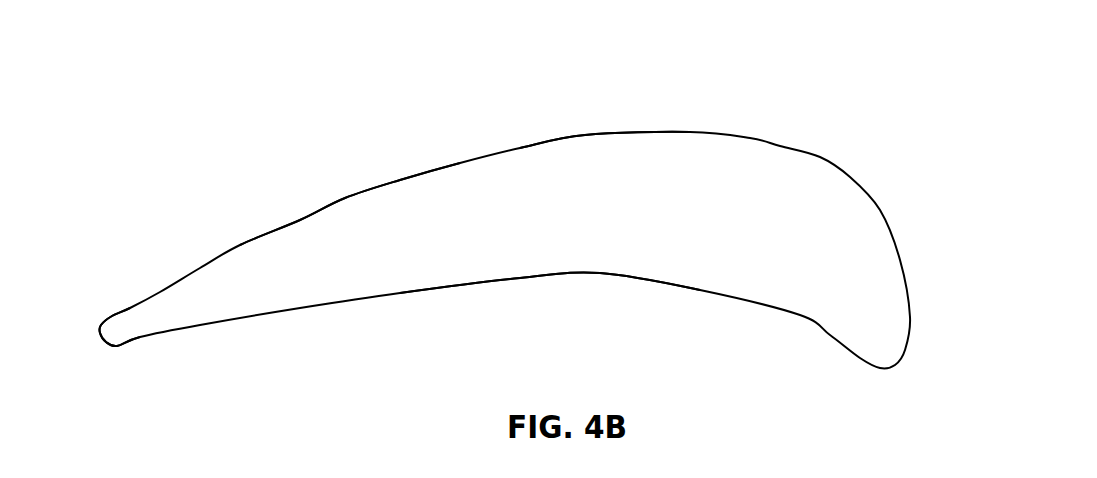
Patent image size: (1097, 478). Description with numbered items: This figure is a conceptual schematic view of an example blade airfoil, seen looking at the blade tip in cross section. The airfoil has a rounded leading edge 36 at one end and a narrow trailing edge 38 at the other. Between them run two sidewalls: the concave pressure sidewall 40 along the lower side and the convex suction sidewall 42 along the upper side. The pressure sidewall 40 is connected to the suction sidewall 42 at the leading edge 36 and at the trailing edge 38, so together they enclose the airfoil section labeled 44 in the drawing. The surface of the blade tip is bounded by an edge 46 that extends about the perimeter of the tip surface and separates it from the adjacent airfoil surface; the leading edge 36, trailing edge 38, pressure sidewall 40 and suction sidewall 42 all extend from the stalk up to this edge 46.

The leading edge 36 is at (894, 168).
The trailing edge 38 is at (88, 298).
The pressure sidewall 40 is at (537, 306).
The suction sidewall 42 is at (388, 145).
The airfoil body 44 is at (589, 228).
The edge 46 is at (585, 135).